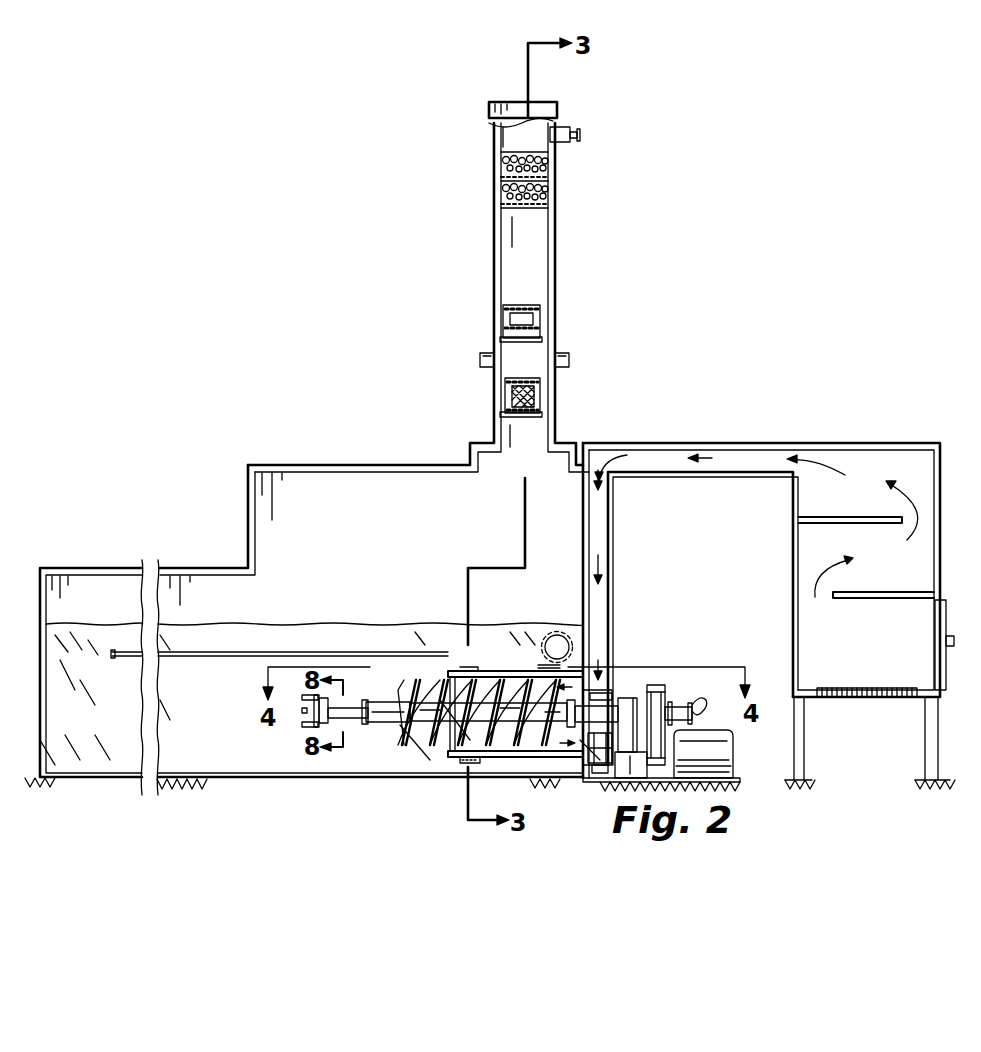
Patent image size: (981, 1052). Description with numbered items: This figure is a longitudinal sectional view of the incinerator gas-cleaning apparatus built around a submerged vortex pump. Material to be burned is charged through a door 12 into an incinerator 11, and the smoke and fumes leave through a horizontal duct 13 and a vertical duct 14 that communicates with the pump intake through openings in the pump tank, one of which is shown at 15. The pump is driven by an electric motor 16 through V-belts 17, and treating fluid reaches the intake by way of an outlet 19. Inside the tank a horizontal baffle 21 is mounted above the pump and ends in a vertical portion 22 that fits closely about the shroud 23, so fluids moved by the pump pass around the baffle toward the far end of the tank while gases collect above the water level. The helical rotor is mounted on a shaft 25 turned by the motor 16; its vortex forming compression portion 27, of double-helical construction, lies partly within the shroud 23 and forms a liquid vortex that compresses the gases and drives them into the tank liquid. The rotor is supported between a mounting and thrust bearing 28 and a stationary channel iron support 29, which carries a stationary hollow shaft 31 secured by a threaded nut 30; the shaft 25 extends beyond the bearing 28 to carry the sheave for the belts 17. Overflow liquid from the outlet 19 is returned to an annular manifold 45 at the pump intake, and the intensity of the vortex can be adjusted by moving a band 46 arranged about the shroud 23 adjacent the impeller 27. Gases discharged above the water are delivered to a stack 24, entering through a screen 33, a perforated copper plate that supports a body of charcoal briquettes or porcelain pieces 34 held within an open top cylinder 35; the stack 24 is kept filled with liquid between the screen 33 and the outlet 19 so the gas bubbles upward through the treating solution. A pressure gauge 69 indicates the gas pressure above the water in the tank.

The incinerator 11 is at (828, 443).
The door 12 is at (940, 632).
The horizontal duct 13 is at (672, 443).
The vertical duct 14 is at (633, 690).
The opening in pump tank 15 is at (612, 677).
The electric motor 16 is at (733, 750).
The V-belts 17 is at (656, 690).
The outlet 19 is at (570, 127).
The horizontal baffle 21 is at (224, 660).
The vertical portion 22 is at (543, 668).
The shroud 23 is at (522, 758).
The stack 24 is at (557, 275).
The shaft 25 is at (500, 670).
The vortex forming compression portion 27 is at (425, 668).
The mounting and thrust bearing 28 is at (630, 698).
The stationary channel iron support 29 is at (300, 733).
The threaded nut 30 is at (357, 723).
The stationary hollow shaft 31 is at (357, 702).
The screen 33 is at (526, 418).
The charcoal briquettes 34 is at (534, 398).
The open top cylinder 35 is at (540, 392).
The annular manifold 45 is at (597, 773).
The band 46 is at (462, 765).
The pressure gauge 69 is at (568, 632).